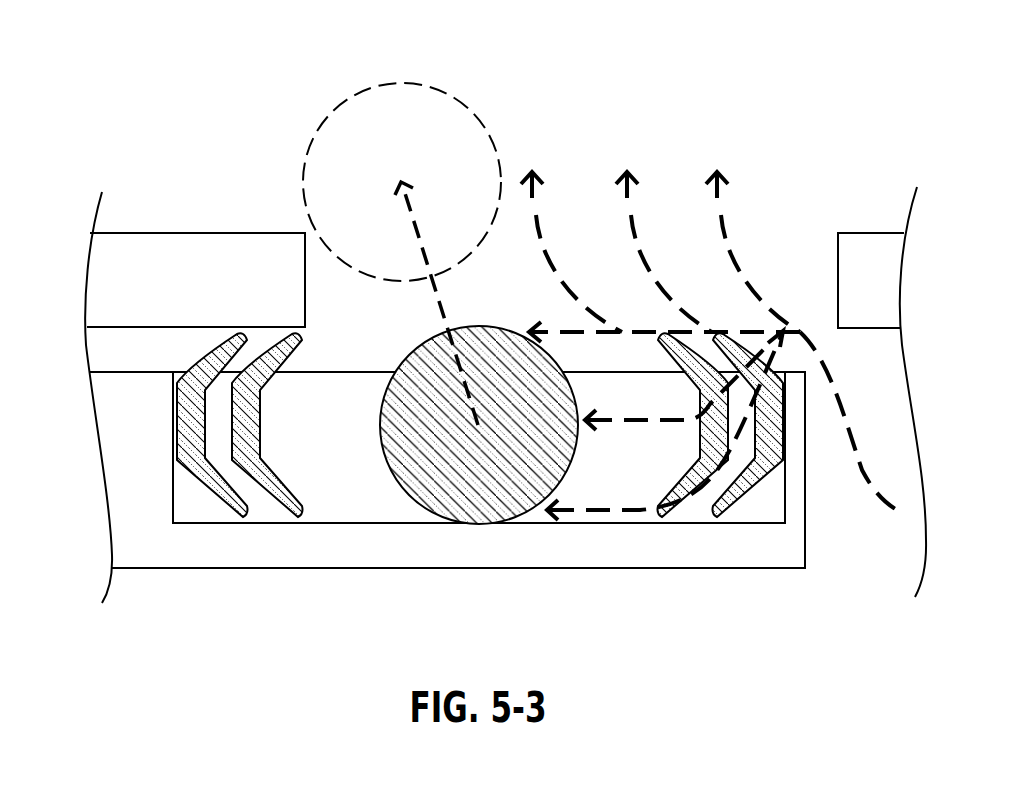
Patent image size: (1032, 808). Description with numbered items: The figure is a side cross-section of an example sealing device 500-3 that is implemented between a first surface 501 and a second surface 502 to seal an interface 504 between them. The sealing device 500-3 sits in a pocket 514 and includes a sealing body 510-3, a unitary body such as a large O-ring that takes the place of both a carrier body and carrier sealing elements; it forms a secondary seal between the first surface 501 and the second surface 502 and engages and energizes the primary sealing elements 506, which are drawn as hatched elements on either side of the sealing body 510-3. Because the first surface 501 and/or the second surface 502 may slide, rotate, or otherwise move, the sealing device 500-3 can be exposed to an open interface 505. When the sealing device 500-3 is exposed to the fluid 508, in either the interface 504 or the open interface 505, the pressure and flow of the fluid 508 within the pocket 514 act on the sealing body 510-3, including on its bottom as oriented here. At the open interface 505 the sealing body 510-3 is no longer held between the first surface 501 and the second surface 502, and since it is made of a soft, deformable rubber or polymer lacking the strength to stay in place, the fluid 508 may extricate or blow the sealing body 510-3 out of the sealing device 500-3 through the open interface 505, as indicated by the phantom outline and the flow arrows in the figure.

The sealing device 500-3 is at (814, 132).
The first surface 501 is at (116, 289).
The second surface 502 is at (114, 472).
The interface 504 is at (120, 343).
The open interface 505 is at (587, 267).
The primary sealing elements 506 is at (263, 536).
The fluid 508 is at (872, 483).
The sealing body 510-3 is at (521, 343).
The pocket 514 is at (168, 502).